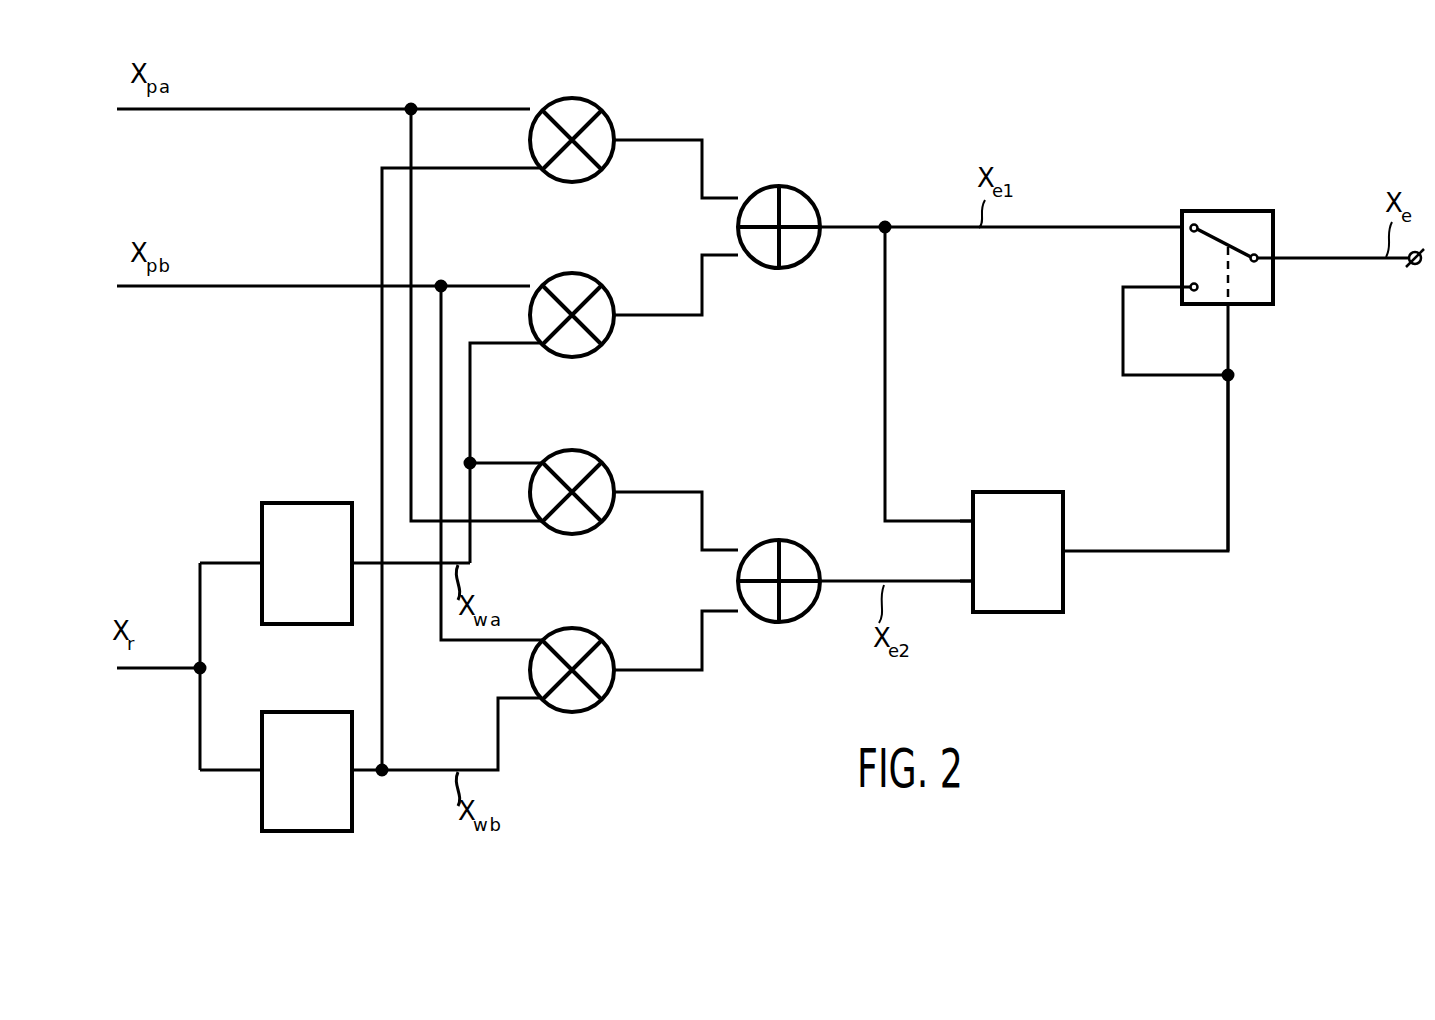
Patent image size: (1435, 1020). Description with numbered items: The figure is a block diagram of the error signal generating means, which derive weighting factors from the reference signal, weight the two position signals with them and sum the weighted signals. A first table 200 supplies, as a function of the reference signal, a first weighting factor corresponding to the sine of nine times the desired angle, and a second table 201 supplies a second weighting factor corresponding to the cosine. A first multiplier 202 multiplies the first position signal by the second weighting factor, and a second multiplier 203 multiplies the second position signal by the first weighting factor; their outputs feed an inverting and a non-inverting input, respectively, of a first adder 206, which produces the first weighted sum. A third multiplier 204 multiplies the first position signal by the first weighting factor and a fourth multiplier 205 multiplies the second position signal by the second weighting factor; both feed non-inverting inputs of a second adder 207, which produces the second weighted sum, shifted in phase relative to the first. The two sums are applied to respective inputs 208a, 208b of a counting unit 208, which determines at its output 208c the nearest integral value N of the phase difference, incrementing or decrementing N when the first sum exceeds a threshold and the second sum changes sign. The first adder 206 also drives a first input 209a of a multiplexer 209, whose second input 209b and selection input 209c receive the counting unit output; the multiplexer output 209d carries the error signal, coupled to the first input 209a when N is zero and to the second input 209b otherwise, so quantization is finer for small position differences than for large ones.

The first table 200 is at (262, 527).
The second table 201 is at (262, 812).
The first multiplier 202 is at (612, 121).
The second multiplier 203 is at (612, 296).
The third multiplier 204 is at (612, 473).
The fourth multiplier 205 is at (612, 652).
The first adder 206 is at (818, 208).
The second adder 207 is at (818, 563).
The counting unit 208 is at (1027, 612).
The comparator first input 208a is at (973, 518).
The comparator second input 208b is at (972, 583).
The comparator output 208c is at (1065, 550).
The multiplexer 209 is at (1236, 210).
The first input 209a is at (1190, 226).
The second input 209b is at (1190, 287).
The selection input 209c is at (1230, 305).
The switch output contact 209d is at (1273, 258).
The nearest integral value N is at (1230, 423).